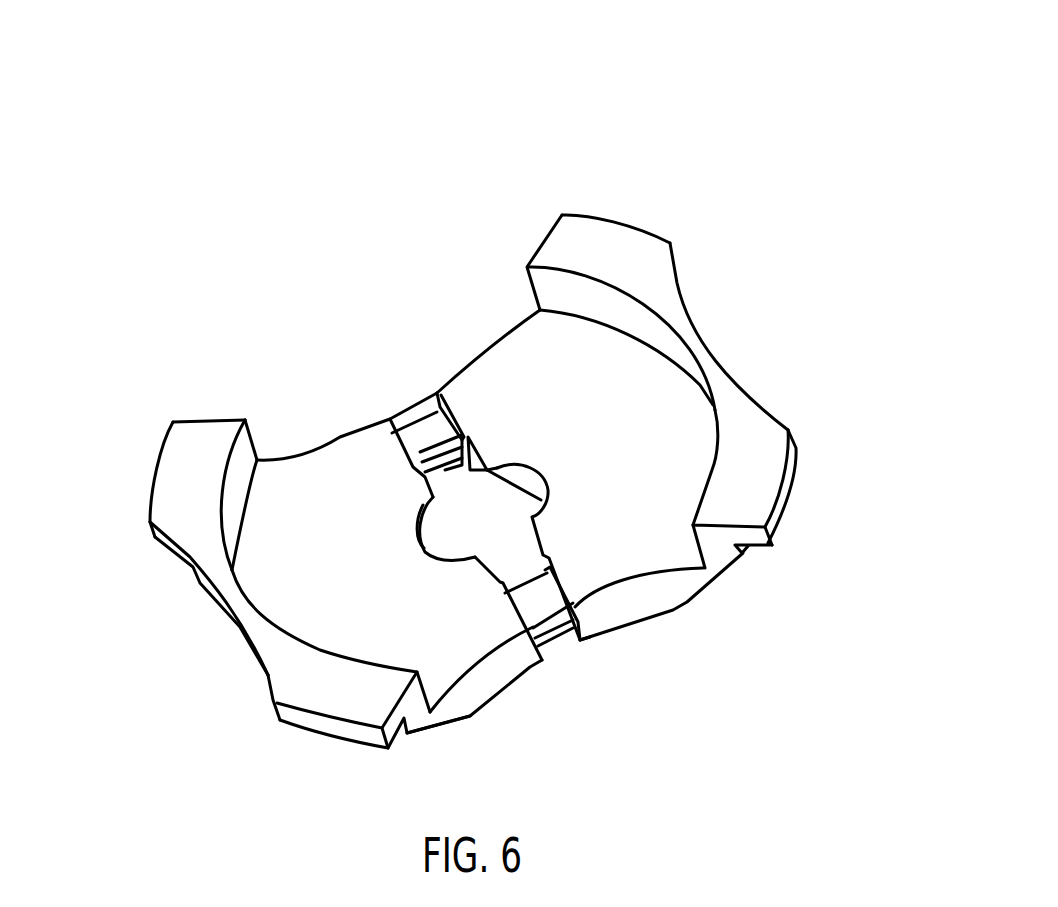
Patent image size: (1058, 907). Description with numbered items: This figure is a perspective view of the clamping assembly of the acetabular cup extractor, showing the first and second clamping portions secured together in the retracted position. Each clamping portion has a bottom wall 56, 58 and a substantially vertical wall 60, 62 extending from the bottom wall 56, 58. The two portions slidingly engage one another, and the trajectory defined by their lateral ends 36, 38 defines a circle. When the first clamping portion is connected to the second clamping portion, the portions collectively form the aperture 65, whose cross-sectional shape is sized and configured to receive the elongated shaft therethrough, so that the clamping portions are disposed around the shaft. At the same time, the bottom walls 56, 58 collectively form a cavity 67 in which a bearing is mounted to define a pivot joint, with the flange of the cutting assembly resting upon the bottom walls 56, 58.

The lateral end 36 is at (163, 443).
The lateral end 38 is at (613, 218).
The bottom wall 56 is at (363, 490).
The bottom wall 58 is at (513, 398).
The substantially vertical wall 60 is at (246, 453).
The substantially vertical wall 62 is at (562, 288).
The aperture 65 is at (460, 480).
The cavity 67 is at (490, 630).